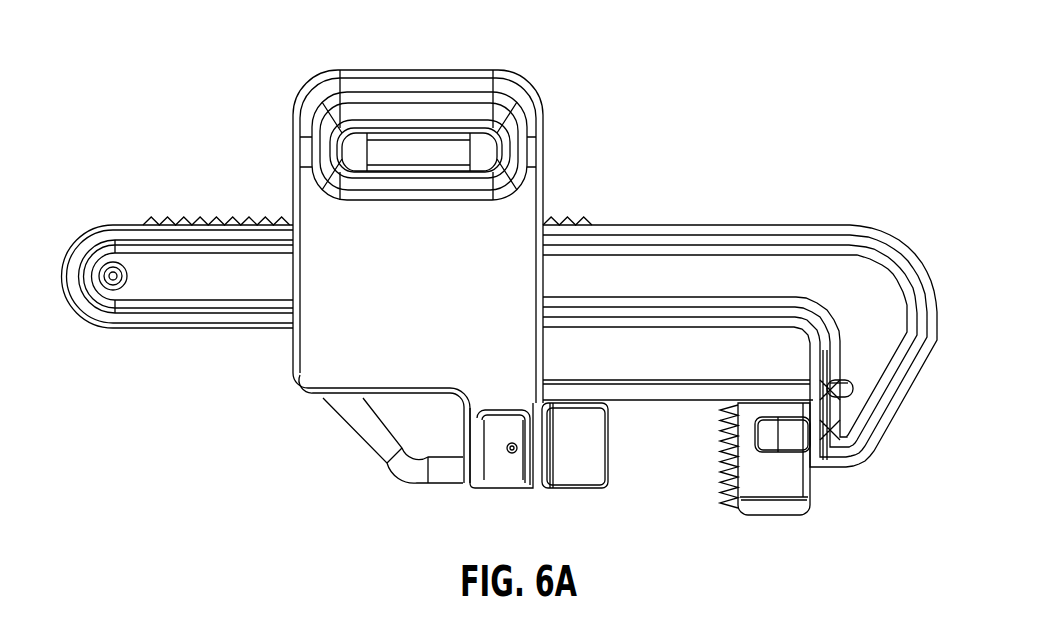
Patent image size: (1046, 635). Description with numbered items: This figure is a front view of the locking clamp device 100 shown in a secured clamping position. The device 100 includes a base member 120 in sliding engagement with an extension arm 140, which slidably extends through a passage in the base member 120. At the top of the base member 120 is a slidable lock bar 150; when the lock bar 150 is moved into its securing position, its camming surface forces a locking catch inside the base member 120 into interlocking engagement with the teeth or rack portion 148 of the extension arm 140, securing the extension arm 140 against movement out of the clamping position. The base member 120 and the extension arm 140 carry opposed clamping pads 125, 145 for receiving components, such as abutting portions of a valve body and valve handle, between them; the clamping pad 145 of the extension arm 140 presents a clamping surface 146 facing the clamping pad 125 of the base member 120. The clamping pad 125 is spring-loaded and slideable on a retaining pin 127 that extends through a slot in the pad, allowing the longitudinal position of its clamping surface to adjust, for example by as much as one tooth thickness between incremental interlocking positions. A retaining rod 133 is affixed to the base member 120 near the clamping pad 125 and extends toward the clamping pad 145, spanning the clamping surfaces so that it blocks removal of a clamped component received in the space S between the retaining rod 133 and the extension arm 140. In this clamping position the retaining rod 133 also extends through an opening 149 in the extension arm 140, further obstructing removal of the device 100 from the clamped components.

The device 100 is at (500, 291).
The base member 120 is at (343, 343).
The clamping pad 125 is at (574, 470).
The retaining pin 127 is at (508, 450).
The retaining rod 133 is at (653, 400).
The extension arm 140 is at (775, 267).
The clamping pad 145 is at (767, 480).
The clamping surface 146 is at (719, 470).
The teeth or rack portion 148 is at (277, 217).
The opening 149 is at (845, 398).
The lock bar 150 is at (450, 143).
The space S is at (615, 347).